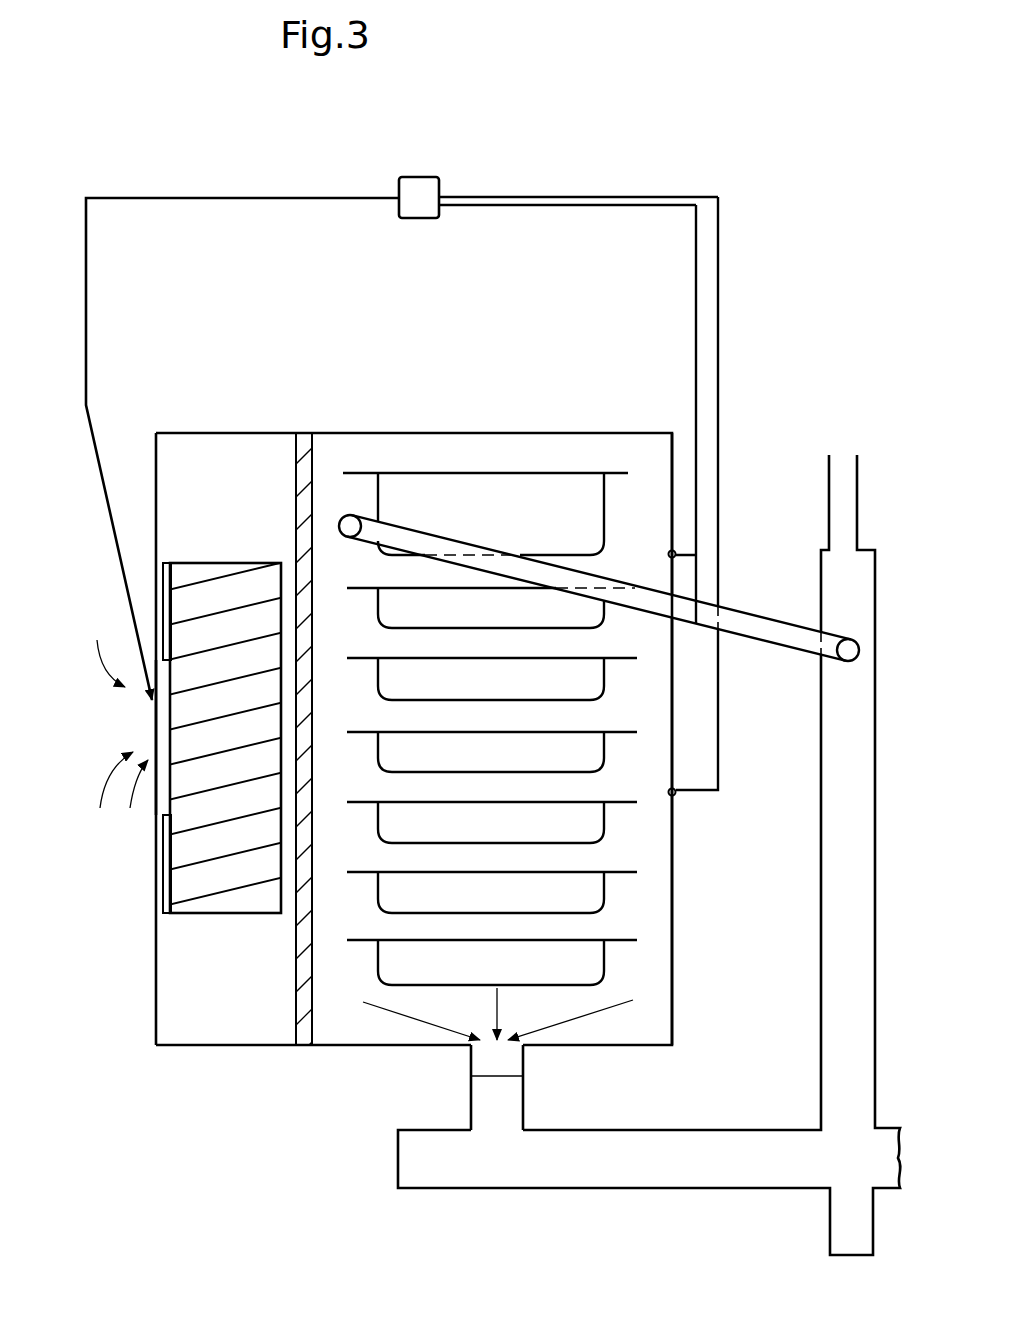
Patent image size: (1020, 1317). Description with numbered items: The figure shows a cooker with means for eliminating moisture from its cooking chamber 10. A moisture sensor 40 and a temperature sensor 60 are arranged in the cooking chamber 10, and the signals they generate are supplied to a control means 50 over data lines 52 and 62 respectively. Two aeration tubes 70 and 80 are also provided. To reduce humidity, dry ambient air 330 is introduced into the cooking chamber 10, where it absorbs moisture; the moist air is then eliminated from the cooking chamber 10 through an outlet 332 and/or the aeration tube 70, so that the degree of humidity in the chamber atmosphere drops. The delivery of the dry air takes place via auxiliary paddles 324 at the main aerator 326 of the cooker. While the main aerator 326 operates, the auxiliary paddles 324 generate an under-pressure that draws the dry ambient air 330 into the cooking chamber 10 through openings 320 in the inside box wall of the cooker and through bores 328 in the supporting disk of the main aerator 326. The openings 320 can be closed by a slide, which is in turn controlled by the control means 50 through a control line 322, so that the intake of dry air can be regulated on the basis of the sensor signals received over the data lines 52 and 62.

The cooking chamber 10 is at (658, 920).
The moisture sensor 40 is at (677, 795).
The control means 50 is at (420, 205).
The data line 52 is at (558, 196).
The temperature sensor 60 is at (674, 553).
The data line 62 is at (700, 293).
The aeration tube 70 is at (758, 612).
The aeration tube 80 is at (820, 716).
The openings 320 is at (150, 747).
The control line 322 is at (243, 196).
The auxiliary paddles 324 is at (168, 558).
The main aerator 326 is at (243, 570).
The bores 328 is at (180, 795).
The dry ambient air 330 is at (115, 727).
The outlet 332 is at (500, 1098).